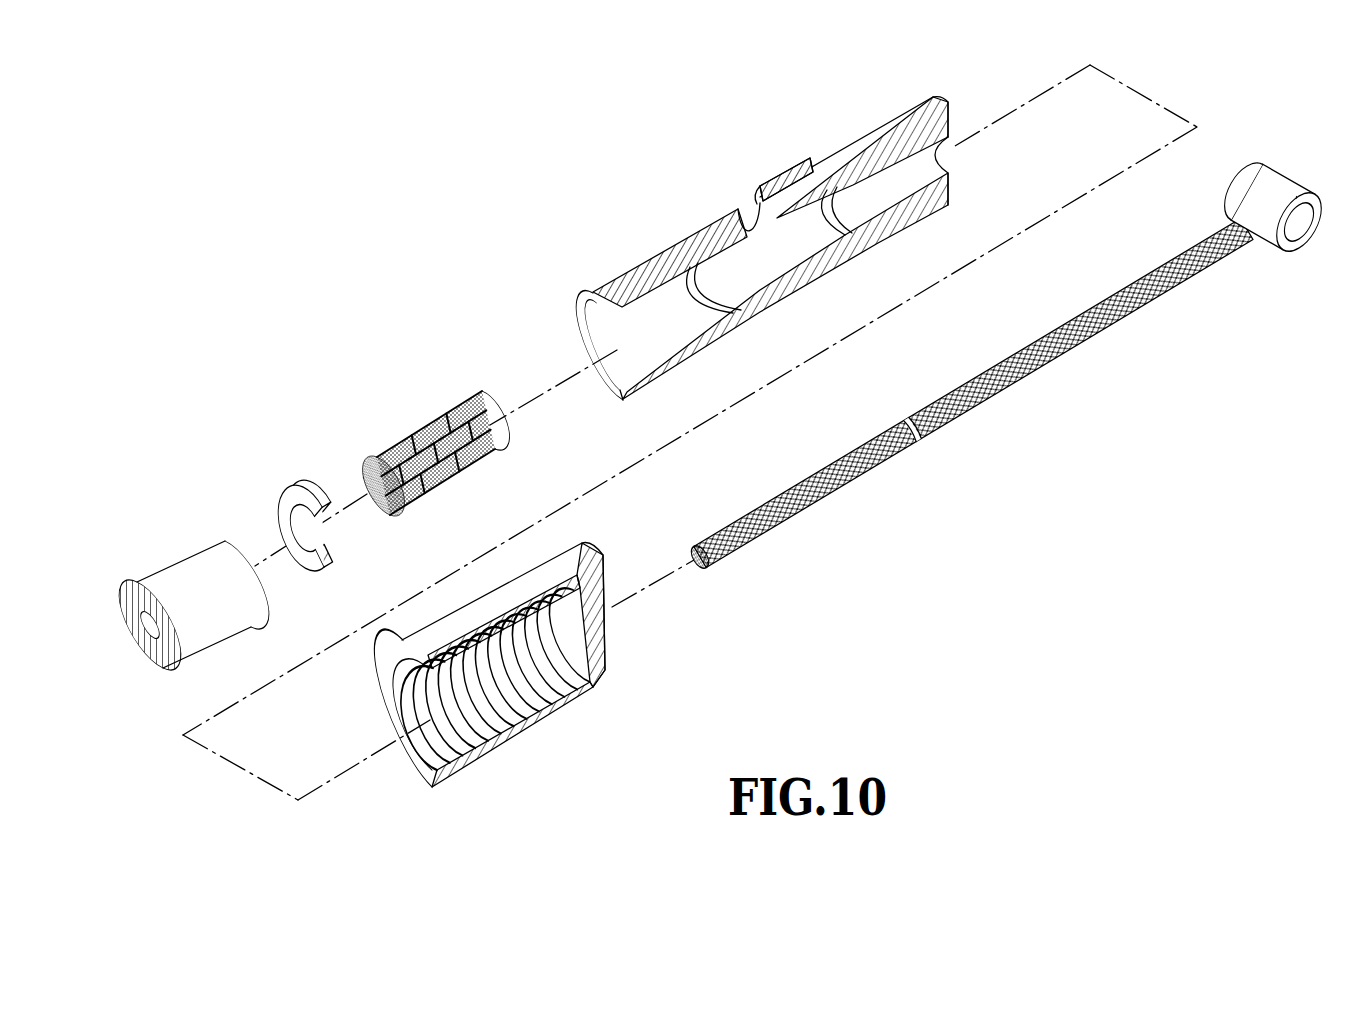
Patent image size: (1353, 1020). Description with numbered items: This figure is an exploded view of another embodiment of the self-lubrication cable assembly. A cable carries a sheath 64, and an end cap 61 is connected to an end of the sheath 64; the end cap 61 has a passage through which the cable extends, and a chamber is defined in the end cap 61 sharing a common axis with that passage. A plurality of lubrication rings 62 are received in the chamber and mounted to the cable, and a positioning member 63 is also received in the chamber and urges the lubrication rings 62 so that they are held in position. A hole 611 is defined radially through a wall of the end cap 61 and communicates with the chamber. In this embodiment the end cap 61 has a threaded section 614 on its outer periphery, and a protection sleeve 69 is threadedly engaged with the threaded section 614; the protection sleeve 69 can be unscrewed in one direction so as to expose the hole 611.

The end cap 61 is at (756, 214).
The hole 611 is at (756, 200).
The threaded section 614 is at (653, 263).
The lubrication rings 62 is at (433, 410).
The positioning member 63 is at (293, 487).
The sheath 64 is at (197, 565).
The protection sleeve 69 is at (568, 712).